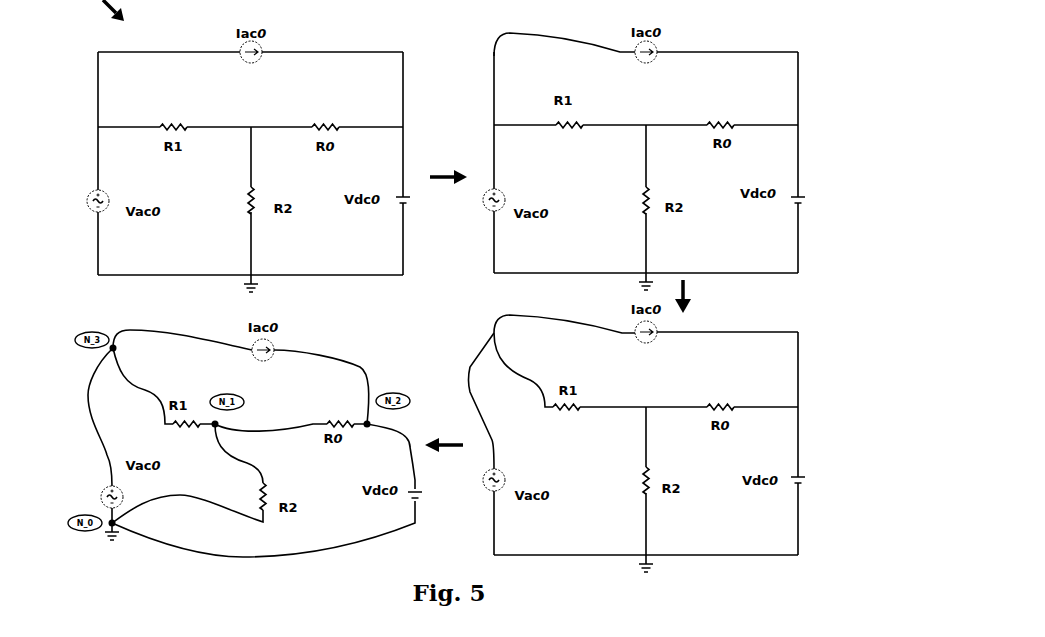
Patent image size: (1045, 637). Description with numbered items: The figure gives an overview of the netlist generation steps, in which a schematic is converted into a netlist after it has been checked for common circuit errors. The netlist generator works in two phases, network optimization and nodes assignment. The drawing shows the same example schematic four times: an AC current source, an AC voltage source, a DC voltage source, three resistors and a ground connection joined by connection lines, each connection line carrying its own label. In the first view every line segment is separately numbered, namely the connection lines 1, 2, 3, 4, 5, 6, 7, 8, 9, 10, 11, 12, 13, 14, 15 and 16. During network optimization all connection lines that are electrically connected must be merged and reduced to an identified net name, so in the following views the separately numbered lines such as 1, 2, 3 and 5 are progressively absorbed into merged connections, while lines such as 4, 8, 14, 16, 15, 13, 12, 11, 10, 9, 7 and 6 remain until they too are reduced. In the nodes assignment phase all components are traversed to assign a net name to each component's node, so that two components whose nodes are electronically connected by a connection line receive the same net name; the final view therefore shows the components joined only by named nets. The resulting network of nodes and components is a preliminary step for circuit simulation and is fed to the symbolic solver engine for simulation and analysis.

The wire segment 1 (top-left branch) 1 is at (169, 44).
The wire segment 2 (left upper branch) 2 is at (283, 89).
The wire segment 3 (left of R1) 3 is at (327, 118).
The wire segment 4 (right of R1) 4 is at (416, 258).
The wire segment 5 (above Vac0) 5 is at (284, 157).
The wire segment 6 (below Vac0) 6 is at (284, 383).
The wire segment 7 (bottom-left branch) 7 is at (372, 423).
The wire segment 8 (left of R0) 8 is at (479, 258).
The wire segment 9 (above R2) 9 is at (459, 296).
The wire segment 10 (below R2) 10 is at (461, 383).
The wire segment 11 (bottom-right branch) 11 is at (524, 420).
The wire segment 12 (below Vdc0) 12 is at (613, 379).
The wire segment 13 (above Vdc0) 13 is at (612, 301).
The wire segment 14 (right of R0) 14 is at (568, 258).
The wire segment 15 (right upper branch) 15 is at (612, 229).
The wire segment 16 (top-right branch) 16 is at (530, 184).